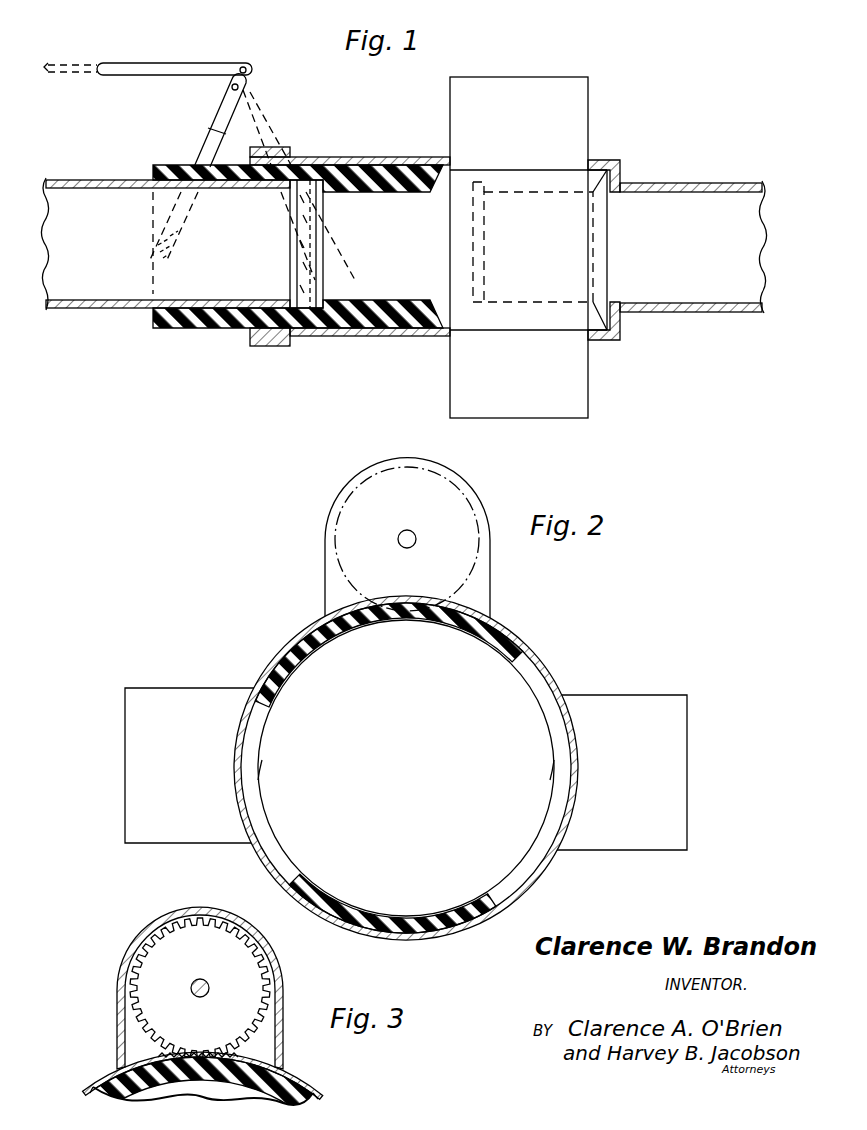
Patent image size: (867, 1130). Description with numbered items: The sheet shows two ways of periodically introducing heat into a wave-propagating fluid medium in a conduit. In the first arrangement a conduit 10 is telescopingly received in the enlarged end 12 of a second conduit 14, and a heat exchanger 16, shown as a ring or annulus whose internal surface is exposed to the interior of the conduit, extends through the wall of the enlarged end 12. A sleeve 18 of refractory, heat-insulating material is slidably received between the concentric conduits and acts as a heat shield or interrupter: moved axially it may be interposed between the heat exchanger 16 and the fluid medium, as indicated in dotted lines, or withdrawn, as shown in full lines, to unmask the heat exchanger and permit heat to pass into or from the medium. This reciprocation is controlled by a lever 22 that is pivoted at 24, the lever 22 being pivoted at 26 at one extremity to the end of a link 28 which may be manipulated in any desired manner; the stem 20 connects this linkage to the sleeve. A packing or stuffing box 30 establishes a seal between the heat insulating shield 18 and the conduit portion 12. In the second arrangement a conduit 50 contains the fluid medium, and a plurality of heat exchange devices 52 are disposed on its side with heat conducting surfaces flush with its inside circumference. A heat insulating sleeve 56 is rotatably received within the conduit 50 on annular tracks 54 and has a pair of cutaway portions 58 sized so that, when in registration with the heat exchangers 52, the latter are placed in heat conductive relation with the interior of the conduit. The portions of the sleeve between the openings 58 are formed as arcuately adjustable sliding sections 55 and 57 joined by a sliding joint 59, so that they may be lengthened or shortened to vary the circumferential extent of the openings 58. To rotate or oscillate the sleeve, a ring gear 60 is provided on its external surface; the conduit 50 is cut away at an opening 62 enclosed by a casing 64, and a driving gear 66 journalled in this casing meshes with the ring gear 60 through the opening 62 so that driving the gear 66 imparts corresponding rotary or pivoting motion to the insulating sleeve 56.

In FIG. 1, the conduit 10 is at (110, 303).
In FIG. 1, the enlarged end 12 is at (363, 160).
In FIG. 1, the second conduit 14 is at (703, 310).
In FIG. 1, the heat exchanger 16 is at (580, 150).
In FIG. 1, the sleeve 18 is at (343, 330).
In FIG. 1, the valve stem 20 is at (212, 148).
In FIG. 1, the lever 22 is at (223, 97).
In FIG. 1, the pivot 24 is at (239, 87).
In FIG. 1, the pivot 26 is at (243, 67).
In FIG. 1, the link 28 is at (182, 70).
In FIG. 1, the packing or stuffing box 30 is at (273, 346).
In FIG. 2, the conduit 50 is at (527, 652).
In FIG. 2, the heat exchange devices 52 is at (185, 697).
In FIG. 3, the heat exchange devices 52 is at (308, 1083).
In FIG. 2, the annular tracks 54 is at (283, 681).
In FIG. 2, the sliding section 55 is at (330, 641).
In FIG. 2, the heat insulating sleeve 56 is at (428, 626).
In FIG. 3, the heat insulating sleeve 56 is at (108, 1077).
In FIG. 2, the sliding section 57 is at (480, 633).
In FIG. 2, the cutaway portions 58 is at (255, 793).
In FIG. 2, the sliding joint 59 is at (368, 626).
In FIG. 3, the ring gear 60 is at (280, 1062).
In FIG. 3, the opening 62 is at (162, 1052).
In FIG. 2, the enclosing casing 64 is at (478, 592).
In FIG. 3, the enclosing casing 64 is at (283, 1008).
In FIG. 2, the driving gear 66 is at (447, 535).
In FIG. 3, the driving gear 66 is at (163, 947).